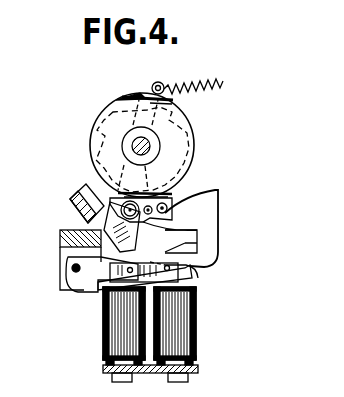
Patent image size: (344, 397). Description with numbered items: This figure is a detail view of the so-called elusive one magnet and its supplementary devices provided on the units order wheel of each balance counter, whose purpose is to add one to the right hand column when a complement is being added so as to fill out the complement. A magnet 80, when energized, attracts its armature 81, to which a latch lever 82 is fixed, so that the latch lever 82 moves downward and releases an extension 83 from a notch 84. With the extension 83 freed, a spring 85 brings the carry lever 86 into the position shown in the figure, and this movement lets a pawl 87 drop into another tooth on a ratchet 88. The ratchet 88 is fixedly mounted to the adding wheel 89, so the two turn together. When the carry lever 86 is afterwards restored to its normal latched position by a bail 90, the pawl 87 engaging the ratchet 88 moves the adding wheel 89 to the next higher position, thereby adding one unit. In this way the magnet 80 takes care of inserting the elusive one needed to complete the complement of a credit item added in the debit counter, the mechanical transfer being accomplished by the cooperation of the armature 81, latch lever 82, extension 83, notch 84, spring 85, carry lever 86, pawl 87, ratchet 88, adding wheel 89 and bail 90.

The magnet 80 is at (190, 340).
The armature 81 is at (192, 288).
The latch lever 82 is at (208, 248).
The extension 83 is at (100, 231).
The notch 84 is at (200, 270).
The spring 85 is at (186, 86).
The carry lever 86 is at (200, 232).
The pawl 87 is at (183, 197).
The ratchet 88 is at (203, 133).
The adding wheel 89 is at (198, 153).
The bail 90 is at (88, 195).